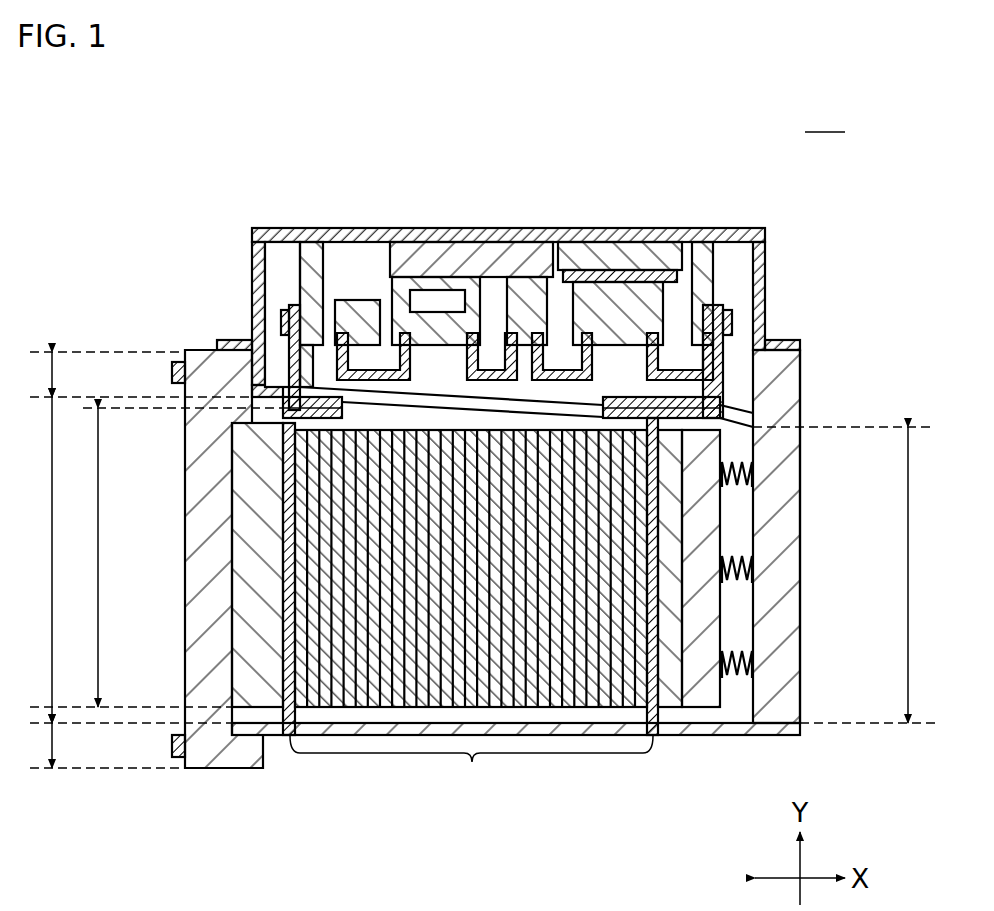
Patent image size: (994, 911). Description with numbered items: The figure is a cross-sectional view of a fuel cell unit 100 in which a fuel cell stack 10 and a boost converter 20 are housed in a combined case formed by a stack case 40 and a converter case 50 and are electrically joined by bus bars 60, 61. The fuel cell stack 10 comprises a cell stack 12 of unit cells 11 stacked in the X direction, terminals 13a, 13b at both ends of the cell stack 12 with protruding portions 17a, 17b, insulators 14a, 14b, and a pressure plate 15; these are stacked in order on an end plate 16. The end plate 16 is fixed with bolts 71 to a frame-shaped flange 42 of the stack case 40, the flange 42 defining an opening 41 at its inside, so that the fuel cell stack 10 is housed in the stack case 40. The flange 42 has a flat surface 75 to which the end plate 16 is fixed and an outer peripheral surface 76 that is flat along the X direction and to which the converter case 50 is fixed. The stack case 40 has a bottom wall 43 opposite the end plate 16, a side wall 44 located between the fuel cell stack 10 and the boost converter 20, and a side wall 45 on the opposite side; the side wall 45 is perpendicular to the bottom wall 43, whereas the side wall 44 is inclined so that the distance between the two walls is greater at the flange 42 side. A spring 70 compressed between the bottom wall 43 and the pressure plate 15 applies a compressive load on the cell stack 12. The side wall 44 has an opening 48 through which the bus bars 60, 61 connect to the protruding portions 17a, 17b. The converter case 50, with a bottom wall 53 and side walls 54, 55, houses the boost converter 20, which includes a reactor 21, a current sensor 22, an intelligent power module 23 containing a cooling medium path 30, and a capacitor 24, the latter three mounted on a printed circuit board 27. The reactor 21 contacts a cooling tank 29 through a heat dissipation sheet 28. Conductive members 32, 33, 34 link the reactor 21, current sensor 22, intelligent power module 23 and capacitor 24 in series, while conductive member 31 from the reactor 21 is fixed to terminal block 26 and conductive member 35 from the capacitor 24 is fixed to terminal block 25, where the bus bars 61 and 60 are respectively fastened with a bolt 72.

The fuel cell unit 100 is at (825, 117).
The fuel cell stack 10 is at (593, 710).
The unit cells 11 is at (390, 728).
The cell stack 12 is at (471, 616).
The terminal 13a is at (288, 732).
The terminal 13b is at (652, 732).
The insulator 14a is at (246, 700).
The insulator 14b is at (670, 708).
The pressure plate 15 is at (702, 708).
The end plate 16 is at (213, 760).
The protruding portion 17a is at (283, 430).
The protruding portion 17b is at (722, 398).
The boost converter 20 is at (655, 238).
The reactor 21 is at (640, 276).
The current sensor 22 is at (527, 287).
The intelligent power module 23 is at (462, 285).
The capacitor 24 is at (380, 372).
The terminal block 25 is at (312, 252).
The terminal block 26 is at (703, 252).
The printed circuit board 27 is at (420, 258).
The heat dissipation sheet 28 is at (610, 300).
The cooling tank 29 is at (588, 256).
The cooling medium path 30 is at (436, 300).
The conductive member 31 is at (715, 335).
The conductive member 32 is at (558, 370).
The conductive member 33 is at (488, 370).
The conductive member 34 is at (355, 312).
The conductive member 35 is at (285, 315).
The stack case 40 is at (800, 487).
The opening 41 is at (250, 427).
The flange 42 is at (220, 348).
The bottom wall 43 is at (800, 575).
The side wall 44 is at (745, 412).
The side wall 45 is at (560, 730).
The opening 48 is at (440, 394).
The converter case 50 is at (511, 283).
The bottom wall 53 is at (292, 234).
The side wall 54 is at (258, 255).
The side wall 55 is at (760, 268).
The bus bar 60 is at (292, 335).
The bus bar 61 is at (770, 345).
The spring 70 is at (752, 662).
The bolts 71 is at (174, 372).
The bolt 72 is at (284, 322).
The flat surface 75 is at (286, 402).
The outer peripheral surface 76 is at (228, 342).